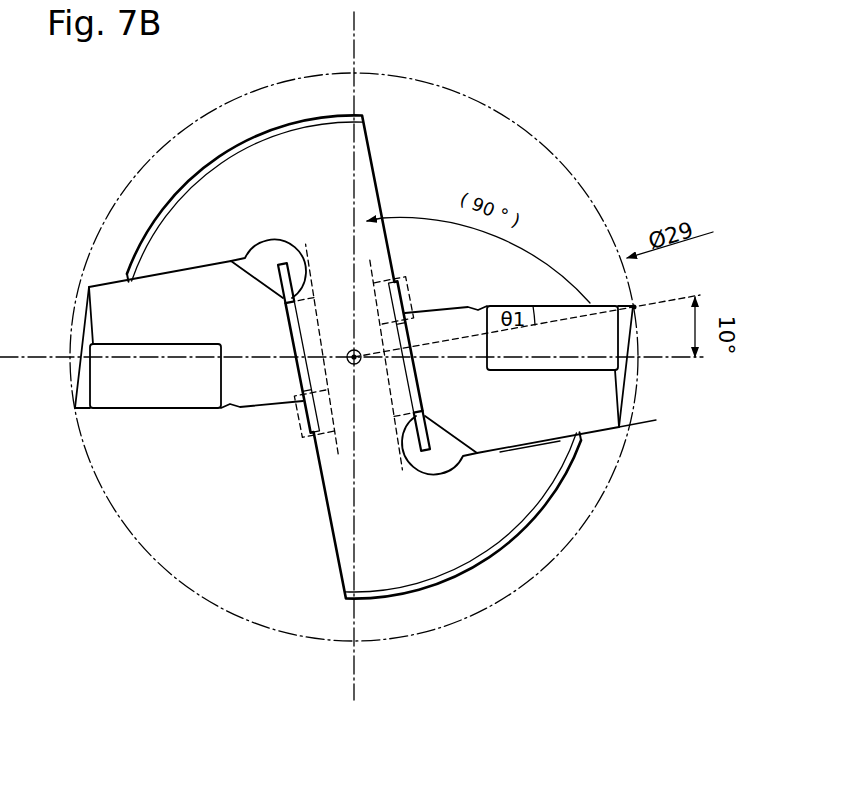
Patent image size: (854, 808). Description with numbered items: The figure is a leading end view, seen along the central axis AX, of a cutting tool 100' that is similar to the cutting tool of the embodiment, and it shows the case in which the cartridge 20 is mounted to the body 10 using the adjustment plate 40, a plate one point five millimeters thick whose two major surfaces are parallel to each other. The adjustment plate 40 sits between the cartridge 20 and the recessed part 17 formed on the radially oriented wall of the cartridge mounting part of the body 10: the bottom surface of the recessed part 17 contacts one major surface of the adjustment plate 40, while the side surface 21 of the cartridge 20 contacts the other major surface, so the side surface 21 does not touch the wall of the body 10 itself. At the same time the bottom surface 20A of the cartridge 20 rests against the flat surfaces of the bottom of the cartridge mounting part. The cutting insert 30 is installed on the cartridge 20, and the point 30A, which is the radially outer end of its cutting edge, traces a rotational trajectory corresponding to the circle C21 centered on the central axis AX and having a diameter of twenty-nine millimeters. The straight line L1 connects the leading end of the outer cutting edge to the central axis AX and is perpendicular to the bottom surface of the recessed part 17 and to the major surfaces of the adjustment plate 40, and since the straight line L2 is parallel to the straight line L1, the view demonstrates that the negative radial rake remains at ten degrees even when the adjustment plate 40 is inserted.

The body 10 is at (367, 168).
The recessed part 17 is at (407, 443).
The cartridge 20 is at (182, 293).
The bottom surface of the cartridge 20A is at (512, 445).
The side surface of the cartridge 21 is at (406, 289).
The cutting insert 30 is at (590, 333).
The point of the cutting edge 30A is at (640, 310).
The adjustment plate 40 is at (296, 318).
The cutting tool 100' is at (595, 643).
The central axis AX is at (351, 356).
The straight line L1 is at (680, 300).
The straight line L2 is at (626, 436).
The circle C21 is at (490, 100).